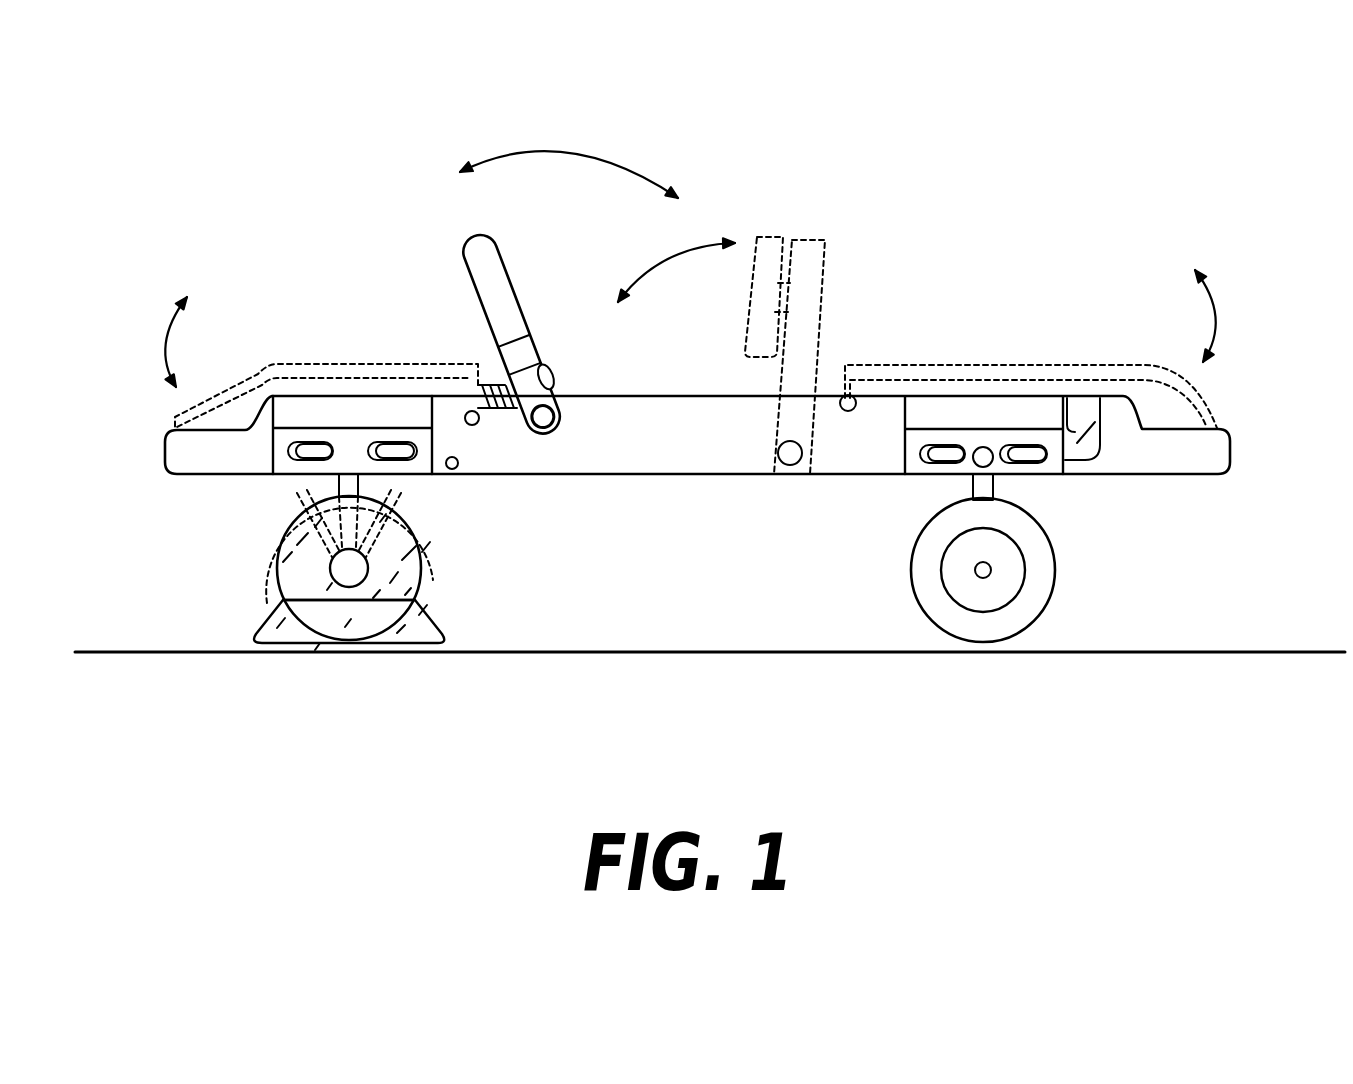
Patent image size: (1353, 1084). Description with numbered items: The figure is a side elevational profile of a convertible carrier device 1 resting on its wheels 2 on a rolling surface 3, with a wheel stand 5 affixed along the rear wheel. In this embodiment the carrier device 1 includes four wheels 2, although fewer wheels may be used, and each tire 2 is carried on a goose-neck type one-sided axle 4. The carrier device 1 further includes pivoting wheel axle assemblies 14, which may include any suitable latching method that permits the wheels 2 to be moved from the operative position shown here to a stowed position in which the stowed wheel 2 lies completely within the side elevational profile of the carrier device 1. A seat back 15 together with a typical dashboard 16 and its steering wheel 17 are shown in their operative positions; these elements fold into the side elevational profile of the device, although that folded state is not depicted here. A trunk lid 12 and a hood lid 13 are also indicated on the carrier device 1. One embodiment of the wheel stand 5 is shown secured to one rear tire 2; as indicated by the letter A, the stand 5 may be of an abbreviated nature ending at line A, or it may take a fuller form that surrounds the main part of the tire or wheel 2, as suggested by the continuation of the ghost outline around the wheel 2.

The carrier device 1 is at (683, 458).
The wheel 2 is at (420, 573).
The rolling surface 3 is at (1246, 652).
The axle 4 is at (342, 482).
The wheel stand 5 is at (300, 633).
The trunk lid 12 is at (258, 385).
The hood lid 13 is at (1013, 363).
The pivoting wheel axle assembly 14 is at (417, 465).
The seat back 15 is at (457, 248).
The dashboard 16 is at (820, 240).
The steering wheel 17 is at (770, 237).
The line A is at (263, 622).